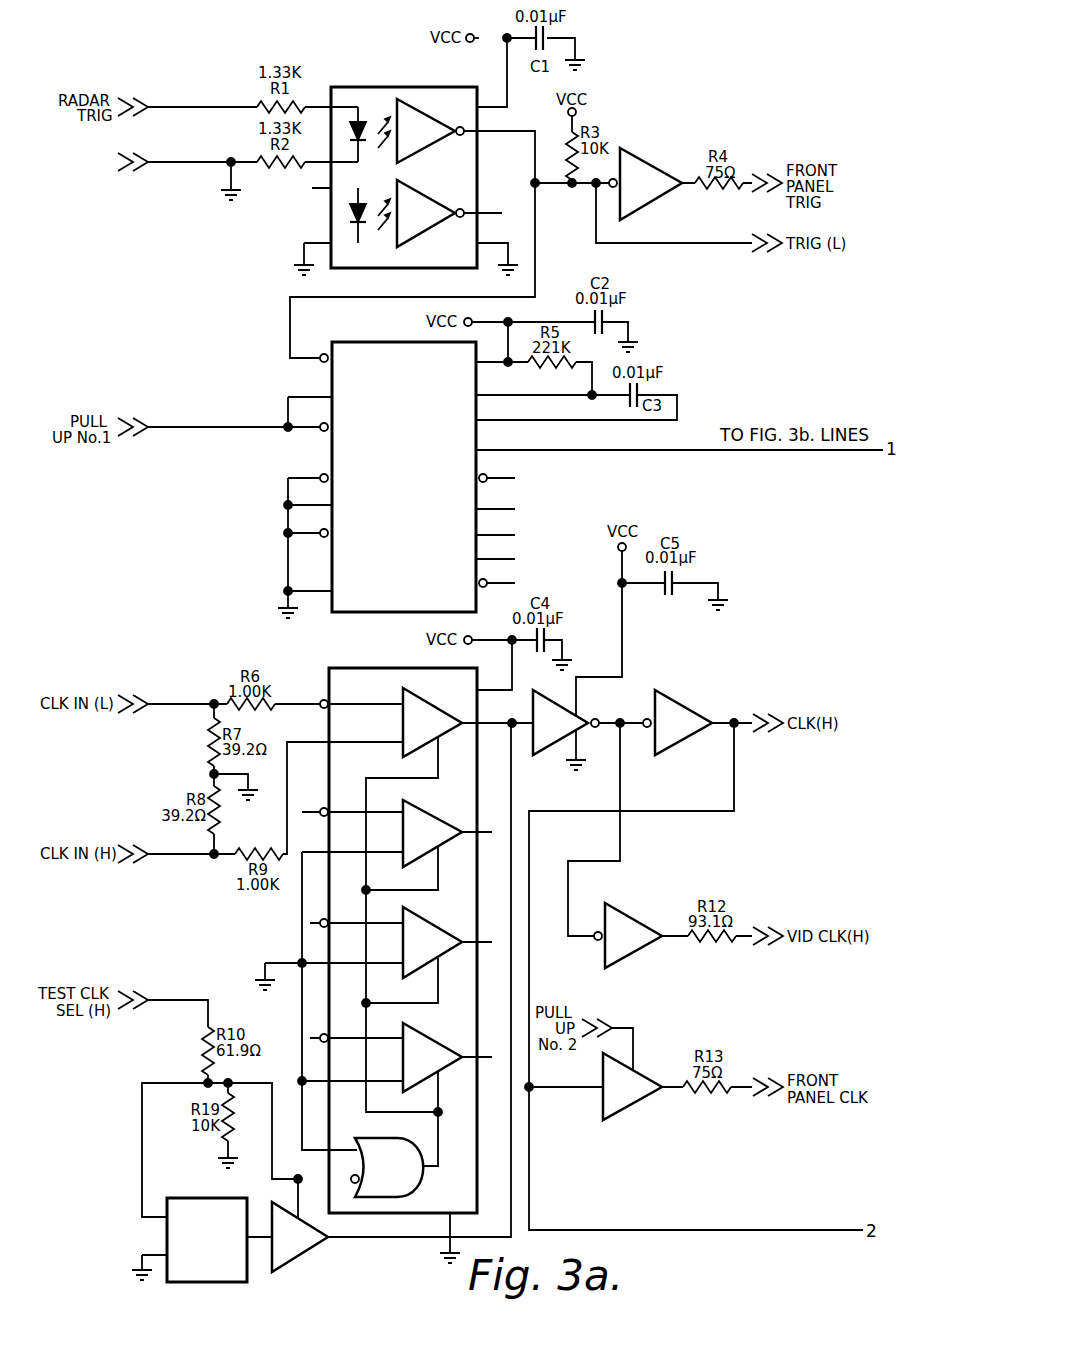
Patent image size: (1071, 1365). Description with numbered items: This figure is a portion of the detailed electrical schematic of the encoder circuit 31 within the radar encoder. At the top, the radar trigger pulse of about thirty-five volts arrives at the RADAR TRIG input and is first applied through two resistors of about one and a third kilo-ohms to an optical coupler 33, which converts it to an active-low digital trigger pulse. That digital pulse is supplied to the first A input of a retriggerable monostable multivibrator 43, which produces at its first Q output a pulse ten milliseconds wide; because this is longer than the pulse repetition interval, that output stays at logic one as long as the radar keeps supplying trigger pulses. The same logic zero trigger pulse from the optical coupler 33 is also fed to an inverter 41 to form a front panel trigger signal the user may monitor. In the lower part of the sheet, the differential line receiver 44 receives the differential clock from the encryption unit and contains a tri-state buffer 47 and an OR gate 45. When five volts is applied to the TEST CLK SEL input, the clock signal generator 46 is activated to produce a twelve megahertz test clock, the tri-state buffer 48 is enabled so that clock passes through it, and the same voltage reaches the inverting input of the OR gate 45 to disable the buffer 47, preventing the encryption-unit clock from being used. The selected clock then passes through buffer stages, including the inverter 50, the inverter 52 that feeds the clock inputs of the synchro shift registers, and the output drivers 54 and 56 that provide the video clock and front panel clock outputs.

The encoder circuit 31 is at (740, 71).
The optical coupler 33 is at (330, 214).
The inverter 41 is at (640, 155).
The retriggerable monostable multivibrator 43 is at (330, 444).
The differential line receiver 44 is at (383, 947).
The OR gate 45 is at (386, 1138).
The clock signal generator 46 is at (201, 1198).
The tri-state buffer 47 is at (403, 697).
The tri-state buffer 48 is at (308, 1249).
The inverter 50 is at (551, 752).
The inverter 52 is at (684, 700).
The inverter 54 is at (633, 950).
The buffer 56 is at (633, 1100).